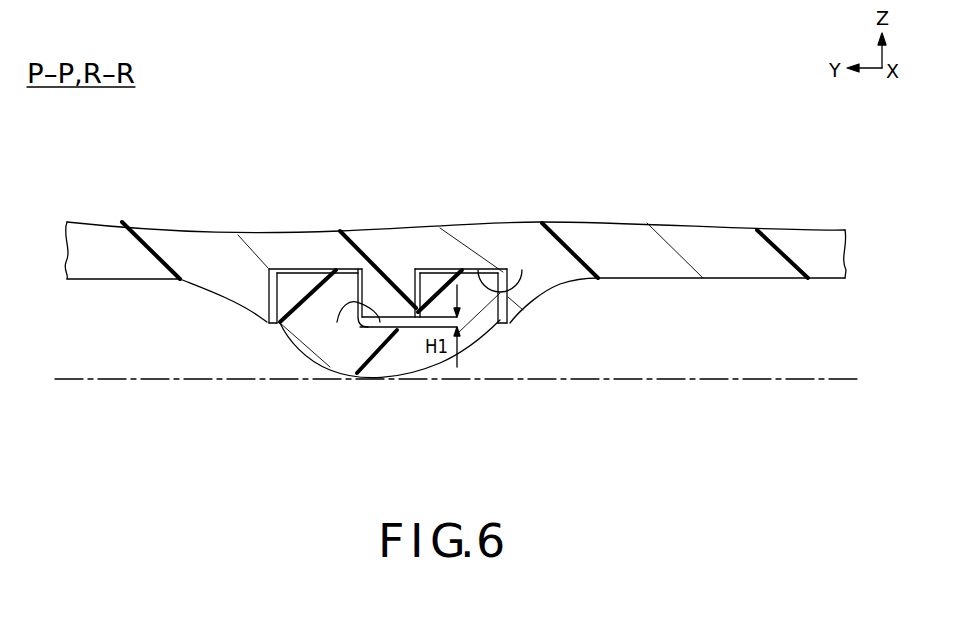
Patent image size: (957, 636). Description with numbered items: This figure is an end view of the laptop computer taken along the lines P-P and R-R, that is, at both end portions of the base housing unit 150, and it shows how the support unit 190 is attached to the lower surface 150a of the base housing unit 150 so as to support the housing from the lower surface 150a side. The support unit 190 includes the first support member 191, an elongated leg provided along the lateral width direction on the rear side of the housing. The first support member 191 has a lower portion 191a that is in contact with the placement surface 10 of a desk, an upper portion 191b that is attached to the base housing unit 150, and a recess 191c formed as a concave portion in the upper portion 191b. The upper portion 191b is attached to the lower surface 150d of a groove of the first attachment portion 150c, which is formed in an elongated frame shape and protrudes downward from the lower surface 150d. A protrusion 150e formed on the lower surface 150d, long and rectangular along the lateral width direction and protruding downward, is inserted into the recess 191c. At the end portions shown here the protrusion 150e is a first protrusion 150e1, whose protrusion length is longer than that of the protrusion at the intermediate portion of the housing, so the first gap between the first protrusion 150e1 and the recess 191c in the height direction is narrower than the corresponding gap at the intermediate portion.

The placement surface 10 is at (833, 377).
The base housing unit 150 is at (730, 218).
The lower surface 150a is at (720, 280).
The first attachment portion 150c is at (543, 288).
The lower surface of groove 150d is at (506, 297).
The protrusion 150e is at (380, 298).
The first protrusion 150e1 is at (380, 322).
The support unit 190 is at (266, 406).
The first support member 191 is at (307, 333).
The lower portion 191a is at (390, 377).
The upper portion 191b is at (302, 268).
The recess 191c is at (337, 322).